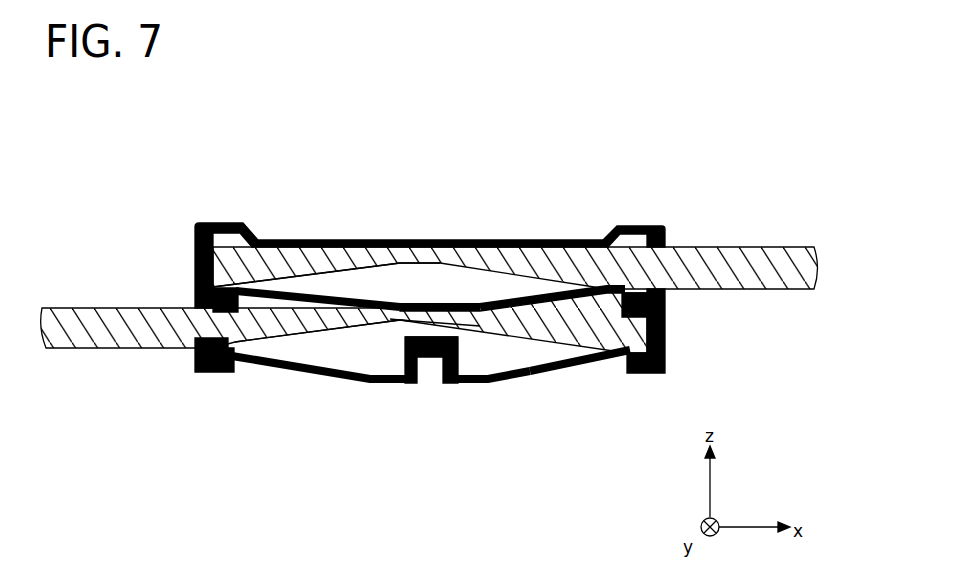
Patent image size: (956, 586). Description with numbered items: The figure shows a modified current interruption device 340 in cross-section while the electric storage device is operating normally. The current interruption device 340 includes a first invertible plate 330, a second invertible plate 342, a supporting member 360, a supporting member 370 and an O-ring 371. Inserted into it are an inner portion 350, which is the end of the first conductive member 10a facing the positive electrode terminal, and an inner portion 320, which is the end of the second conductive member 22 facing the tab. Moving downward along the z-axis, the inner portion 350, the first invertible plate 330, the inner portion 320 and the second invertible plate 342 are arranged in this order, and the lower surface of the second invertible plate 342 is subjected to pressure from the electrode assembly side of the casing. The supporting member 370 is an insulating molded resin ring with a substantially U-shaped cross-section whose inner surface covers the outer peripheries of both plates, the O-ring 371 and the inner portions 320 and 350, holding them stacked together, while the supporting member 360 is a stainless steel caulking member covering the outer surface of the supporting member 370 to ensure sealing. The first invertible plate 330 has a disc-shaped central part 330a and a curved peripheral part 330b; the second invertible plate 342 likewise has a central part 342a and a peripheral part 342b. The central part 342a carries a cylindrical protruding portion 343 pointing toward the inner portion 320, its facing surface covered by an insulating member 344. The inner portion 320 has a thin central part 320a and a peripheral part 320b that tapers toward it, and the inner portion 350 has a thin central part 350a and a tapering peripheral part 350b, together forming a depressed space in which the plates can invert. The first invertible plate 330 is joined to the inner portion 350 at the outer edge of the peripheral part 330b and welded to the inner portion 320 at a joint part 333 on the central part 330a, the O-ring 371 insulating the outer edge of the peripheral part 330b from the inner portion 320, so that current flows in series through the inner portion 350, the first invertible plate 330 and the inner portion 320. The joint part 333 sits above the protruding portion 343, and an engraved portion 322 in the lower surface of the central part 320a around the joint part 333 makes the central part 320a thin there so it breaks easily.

The first conductive member 10a is at (515, 193).
The second conductive member 22 is at (344, 390).
The inner portion 320 is at (357, 403).
The central part 320a is at (400, 320).
The peripheral part 320b is at (290, 328).
The engraved portion 322 is at (395, 382).
The first invertible plate 330 is at (434, 203).
The central part 330a is at (473, 300).
The peripheral part 330b is at (577, 287).
The joint part 333 is at (428, 296).
The current interruption device 340 is at (383, 308).
The second invertible plate 342 is at (543, 420).
The central part 342a is at (480, 383).
The peripheral part 342b is at (580, 398).
The protruding portion 343 is at (430, 386).
The insulating member 344 is at (457, 340).
The inner portion 350 is at (326, 192).
The central part 350a is at (397, 240).
The peripheral part 350b is at (314, 240).
The supporting member 360 is at (268, 240).
The supporting member 370 is at (208, 372).
The O-ring 371 is at (196, 302).